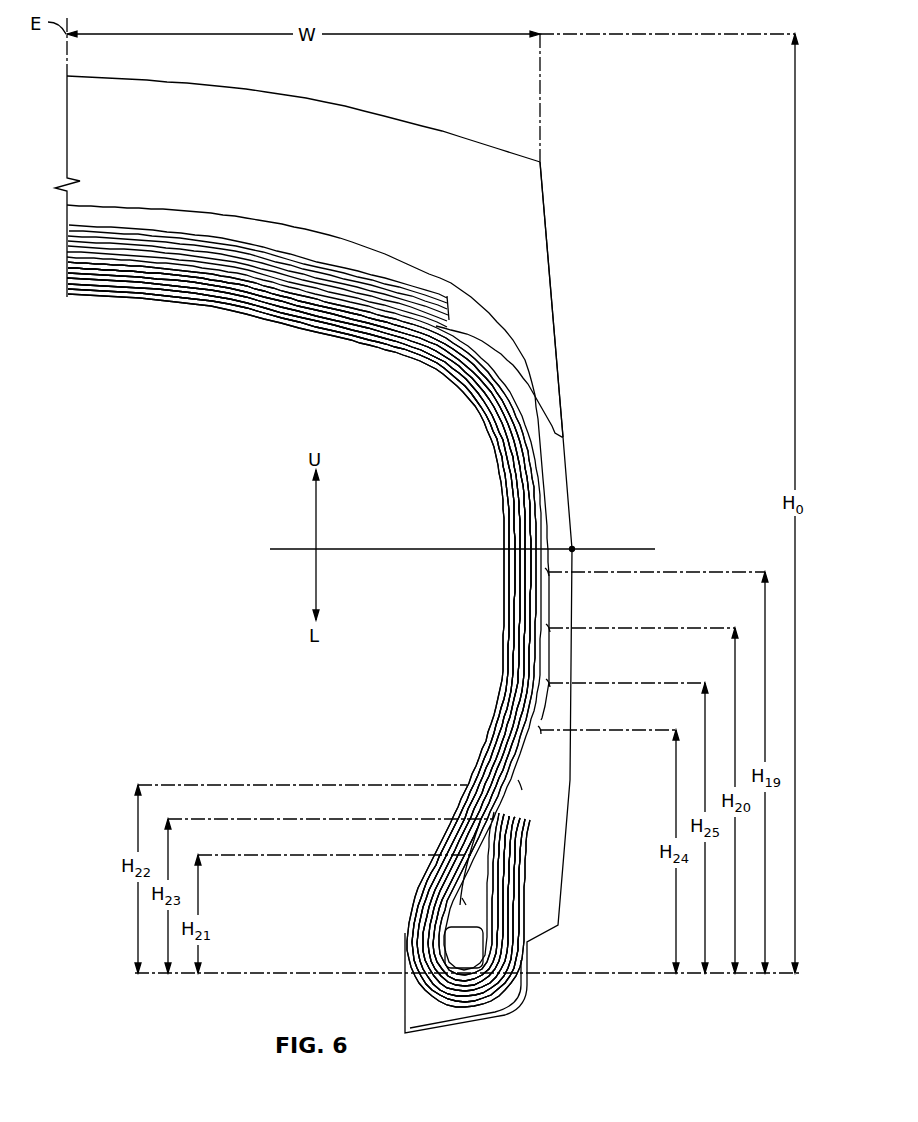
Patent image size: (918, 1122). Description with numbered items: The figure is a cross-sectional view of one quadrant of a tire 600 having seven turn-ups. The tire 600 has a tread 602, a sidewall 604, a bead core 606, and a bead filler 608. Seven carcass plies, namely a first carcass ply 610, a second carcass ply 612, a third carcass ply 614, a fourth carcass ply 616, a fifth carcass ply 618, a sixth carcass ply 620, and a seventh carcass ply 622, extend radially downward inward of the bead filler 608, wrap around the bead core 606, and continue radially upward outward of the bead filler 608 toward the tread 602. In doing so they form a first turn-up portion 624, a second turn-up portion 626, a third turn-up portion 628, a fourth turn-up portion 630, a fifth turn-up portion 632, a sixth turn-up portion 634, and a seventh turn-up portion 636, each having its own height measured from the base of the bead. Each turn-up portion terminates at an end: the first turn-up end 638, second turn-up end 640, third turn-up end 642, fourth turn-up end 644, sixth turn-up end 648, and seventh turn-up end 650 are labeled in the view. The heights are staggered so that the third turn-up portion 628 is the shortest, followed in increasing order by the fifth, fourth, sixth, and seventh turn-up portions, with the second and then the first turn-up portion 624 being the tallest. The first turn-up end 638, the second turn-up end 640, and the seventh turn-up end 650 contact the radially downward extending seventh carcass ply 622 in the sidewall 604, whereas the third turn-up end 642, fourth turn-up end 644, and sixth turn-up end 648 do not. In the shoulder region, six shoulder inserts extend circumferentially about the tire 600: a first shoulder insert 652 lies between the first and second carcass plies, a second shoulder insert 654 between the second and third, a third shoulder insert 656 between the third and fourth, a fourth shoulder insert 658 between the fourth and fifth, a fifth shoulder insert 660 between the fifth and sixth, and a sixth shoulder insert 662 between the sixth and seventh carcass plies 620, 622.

The tire 600 is at (598, 171).
The tread 602 is at (419, 119).
The sidewall 604 is at (554, 303).
The bead core 606 is at (447, 952).
The bead filler 608 is at (460, 898).
The first carcass ply 610 is at (87, 293).
The second carcass ply 612 is at (113, 288).
The third carcass ply 614 is at (133, 283).
The fourth carcass ply 616 is at (171, 280).
The fifth carcass ply 618 is at (191, 278).
The sixth carcass ply 620 is at (228, 276).
The seventh carcass ply 622 is at (258, 272).
The first turn-up portion 624 is at (513, 977).
The second turn-up portion 626 is at (512, 957).
The third turn-up portion 628 is at (507, 937).
The fourth turn-up portion 630 is at (502, 927).
The fifth turn-up portion 632 is at (500, 907).
The sixth turn-up portion 634 is at (498, 882).
The seventh turn-up portion 636 is at (497, 860).
The first turn-up end 638 is at (548, 572).
The second turn-up end 640 is at (549, 628).
The third turn-up end 642 is at (510, 861).
The fourth turn-up end 644 is at (520, 785).
The sixth turn-up end 648 is at (540, 730).
The seventh turn-up end 650 is at (549, 683).
The first shoulder insert 652 is at (427, 368).
The second shoulder insert 654 is at (450, 382).
The third shoulder insert 656 is at (477, 398).
The fourth shoulder insert 658 is at (500, 413).
The fifth shoulder insert 660 is at (510, 427).
The sixth shoulder insert 662 is at (517, 430).